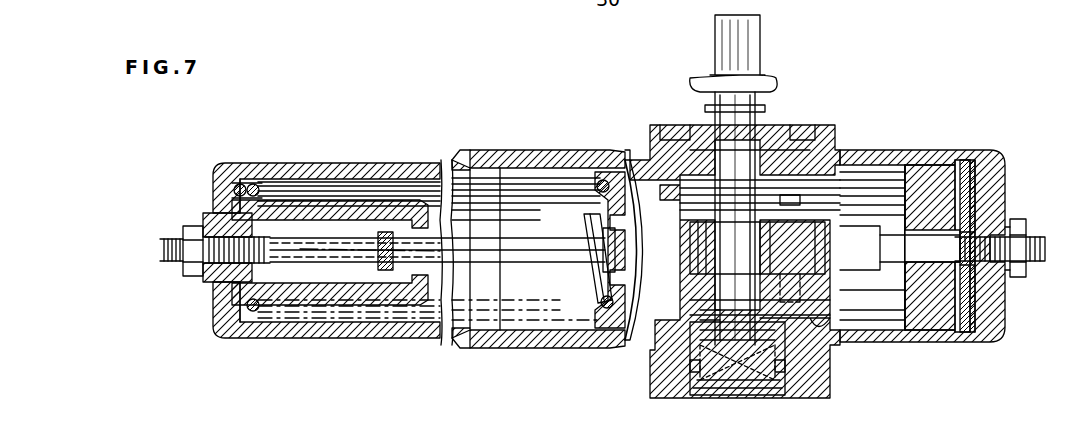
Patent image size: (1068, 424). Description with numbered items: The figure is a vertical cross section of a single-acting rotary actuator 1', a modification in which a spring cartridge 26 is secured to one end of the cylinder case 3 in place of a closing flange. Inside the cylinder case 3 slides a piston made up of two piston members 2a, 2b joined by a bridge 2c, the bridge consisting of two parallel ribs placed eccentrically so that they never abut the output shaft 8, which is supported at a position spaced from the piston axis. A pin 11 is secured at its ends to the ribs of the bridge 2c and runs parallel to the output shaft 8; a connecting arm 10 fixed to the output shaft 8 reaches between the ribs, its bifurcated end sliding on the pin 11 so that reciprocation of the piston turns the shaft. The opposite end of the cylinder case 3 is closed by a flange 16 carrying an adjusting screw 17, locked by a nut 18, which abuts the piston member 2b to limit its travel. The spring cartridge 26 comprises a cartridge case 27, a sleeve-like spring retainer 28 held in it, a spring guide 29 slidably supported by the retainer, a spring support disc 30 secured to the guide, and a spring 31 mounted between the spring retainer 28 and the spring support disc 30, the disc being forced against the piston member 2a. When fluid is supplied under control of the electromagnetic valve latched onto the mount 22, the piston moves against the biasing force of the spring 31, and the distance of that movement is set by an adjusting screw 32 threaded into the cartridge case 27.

The single-acting rotary actuator 1' is at (740, 219).
The piston member 2a is at (650, 165).
The piston member 2b is at (925, 170).
The bridge 2c is at (880, 300).
The cylinder case 3 is at (548, 148).
The output shaft 8 is at (770, 195).
The connecting arm 10 is at (815, 252).
The pin 11 is at (830, 150).
The flange 16 is at (990, 150).
The adjusting screw 17 is at (1046, 232).
The nut 18 is at (1018, 219).
The mount 22 is at (815, 0).
The spring cartridge 26 is at (411, 162).
The cartridge case 27 is at (331, 164).
The spring retainer 28 is at (302, 212).
The spring guide 29 is at (383, 232).
The spring support disc 30 is at (600, 184).
The spring 31 is at (590, 330).
The adjusting screw 32 is at (168, 226).